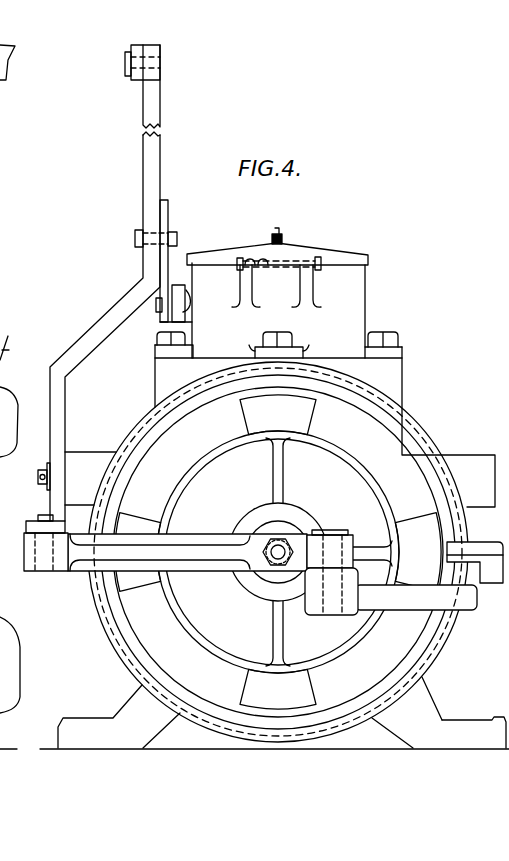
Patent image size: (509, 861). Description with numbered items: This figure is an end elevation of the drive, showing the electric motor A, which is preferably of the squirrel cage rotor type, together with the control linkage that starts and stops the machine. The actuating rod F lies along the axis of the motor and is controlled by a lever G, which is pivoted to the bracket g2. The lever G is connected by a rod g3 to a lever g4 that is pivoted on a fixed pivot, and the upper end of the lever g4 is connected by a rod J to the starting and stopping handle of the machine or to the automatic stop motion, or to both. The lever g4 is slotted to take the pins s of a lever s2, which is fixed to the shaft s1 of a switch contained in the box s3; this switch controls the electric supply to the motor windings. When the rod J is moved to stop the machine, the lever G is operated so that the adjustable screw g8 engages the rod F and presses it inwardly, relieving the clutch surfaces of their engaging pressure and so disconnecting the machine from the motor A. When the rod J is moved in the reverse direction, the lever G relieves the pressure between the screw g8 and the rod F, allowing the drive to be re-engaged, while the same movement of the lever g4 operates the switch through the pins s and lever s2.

The electric motor A is at (423, 430).
The box s3 is at (352, 290).
The lever g4 is at (148, 155).
The rod J is at (132, 80).
The lever s2 is at (170, 212).
The pins s is at (135, 237).
The shaft s1 is at (157, 315).
The lever G is at (185, 537).
The rod g3 is at (40, 530).
The bracket g2 is at (410, 597).
The adjustable screw g8 is at (38, 477).
The actuating rod F is at (284, 535).